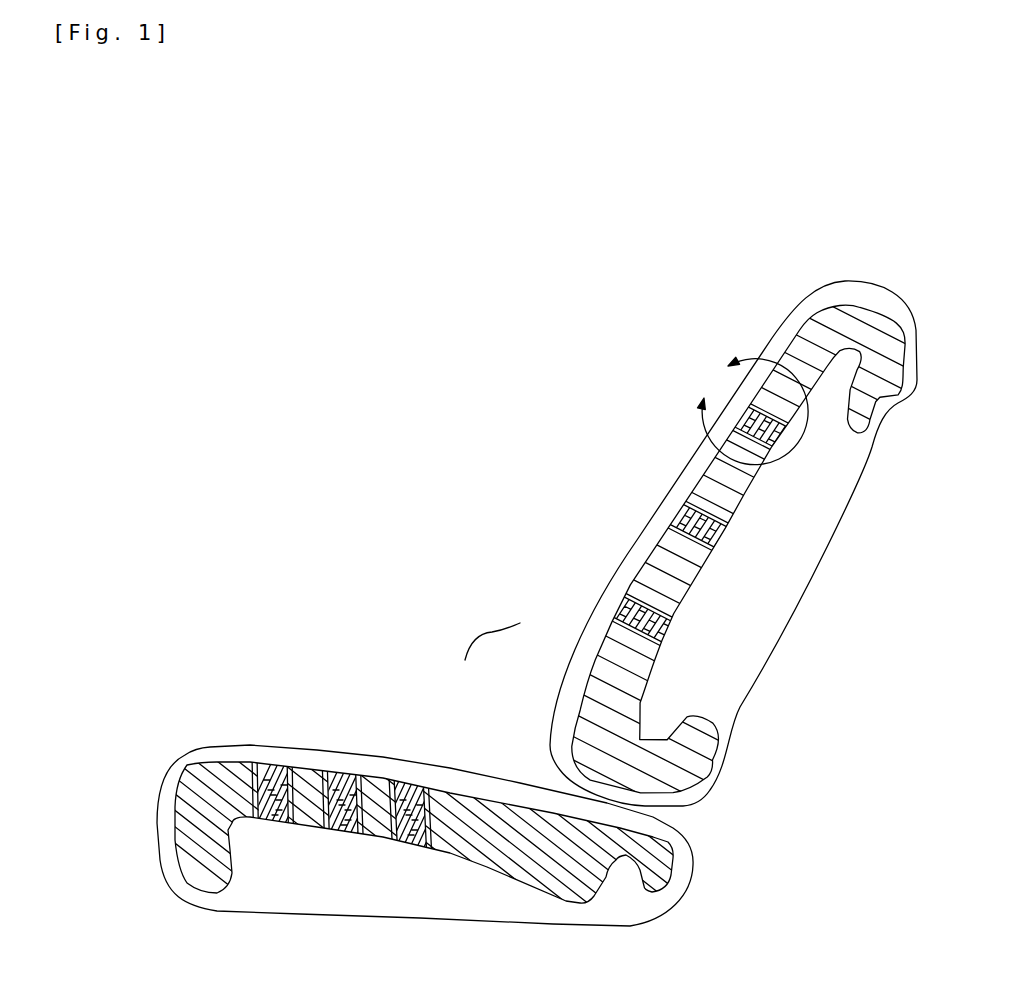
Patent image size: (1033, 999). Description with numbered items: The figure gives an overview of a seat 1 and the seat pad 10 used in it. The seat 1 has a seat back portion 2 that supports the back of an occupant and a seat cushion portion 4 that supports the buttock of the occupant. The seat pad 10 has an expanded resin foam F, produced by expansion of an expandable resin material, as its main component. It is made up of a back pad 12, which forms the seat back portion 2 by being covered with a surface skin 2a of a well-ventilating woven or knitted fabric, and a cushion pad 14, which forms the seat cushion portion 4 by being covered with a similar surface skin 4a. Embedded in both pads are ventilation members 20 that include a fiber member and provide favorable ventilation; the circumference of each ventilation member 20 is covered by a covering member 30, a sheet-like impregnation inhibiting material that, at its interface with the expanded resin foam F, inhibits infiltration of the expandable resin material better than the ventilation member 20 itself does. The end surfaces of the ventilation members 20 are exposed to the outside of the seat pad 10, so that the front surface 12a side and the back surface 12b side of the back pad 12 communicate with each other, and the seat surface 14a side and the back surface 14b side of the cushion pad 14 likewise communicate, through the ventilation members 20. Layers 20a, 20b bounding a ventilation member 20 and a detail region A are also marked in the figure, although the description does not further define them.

The seat 1 is at (393, 275).
The seat back portion 2 is at (751, 538).
The surface skin 2a is at (635, 536).
The seat cushion portion 4 is at (496, 780).
The surface skin 4a is at (318, 750).
The seat pad 10 is at (492, 633).
The back pad 12 is at (583, 693).
The front surface 12a is at (618, 603).
The back surface 12b is at (655, 625).
The cushion pad 14 is at (490, 800).
The seat surface 14a is at (372, 772).
The back surface 14b is at (363, 840).
The ventilation member 20 is at (762, 428).
The first adhesive layer 20a is at (720, 530).
The second adhesive layer 20b is at (683, 508).
The covering member 30 is at (707, 517).
The detail region / direction A is at (753, 410).
The expanded resin foam F is at (823, 336).